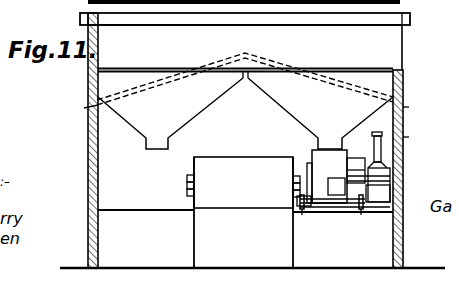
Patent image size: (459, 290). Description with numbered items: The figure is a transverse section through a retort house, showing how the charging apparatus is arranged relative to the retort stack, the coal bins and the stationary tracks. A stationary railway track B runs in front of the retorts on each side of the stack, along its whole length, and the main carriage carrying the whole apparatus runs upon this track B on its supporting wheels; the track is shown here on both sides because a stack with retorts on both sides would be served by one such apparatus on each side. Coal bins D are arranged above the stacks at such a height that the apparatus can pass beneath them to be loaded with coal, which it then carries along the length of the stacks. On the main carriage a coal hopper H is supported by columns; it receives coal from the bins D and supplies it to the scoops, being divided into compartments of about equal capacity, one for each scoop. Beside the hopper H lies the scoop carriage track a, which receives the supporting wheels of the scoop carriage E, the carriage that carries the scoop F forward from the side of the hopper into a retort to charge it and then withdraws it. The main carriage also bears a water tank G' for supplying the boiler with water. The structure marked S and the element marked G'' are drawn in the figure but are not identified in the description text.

The coal bin D is at (332, 100).
The box S is at (243, 182).
The railway track B is at (168, 209).
The coal hopper H is at (327, 176).
The scoop carriage E is at (368, 170).
The scoop F is at (379, 167).
The water tank G' is at (378, 193).
The element G double prime G'' is at (336, 186).
The scoop carriage track a is at (304, 202).